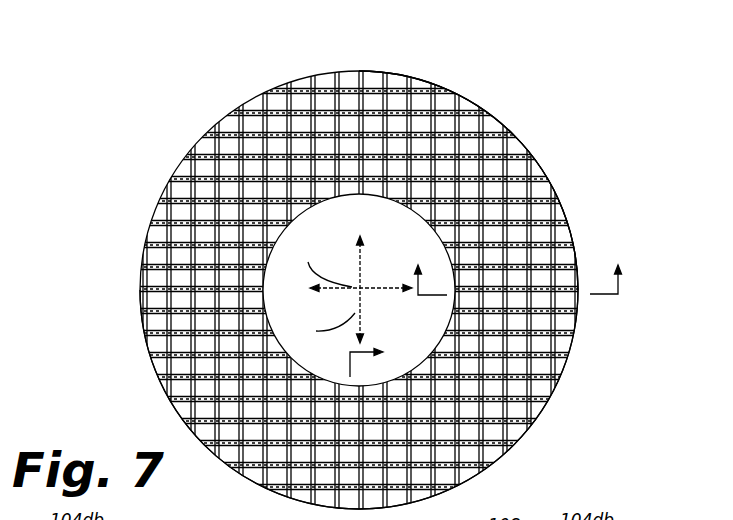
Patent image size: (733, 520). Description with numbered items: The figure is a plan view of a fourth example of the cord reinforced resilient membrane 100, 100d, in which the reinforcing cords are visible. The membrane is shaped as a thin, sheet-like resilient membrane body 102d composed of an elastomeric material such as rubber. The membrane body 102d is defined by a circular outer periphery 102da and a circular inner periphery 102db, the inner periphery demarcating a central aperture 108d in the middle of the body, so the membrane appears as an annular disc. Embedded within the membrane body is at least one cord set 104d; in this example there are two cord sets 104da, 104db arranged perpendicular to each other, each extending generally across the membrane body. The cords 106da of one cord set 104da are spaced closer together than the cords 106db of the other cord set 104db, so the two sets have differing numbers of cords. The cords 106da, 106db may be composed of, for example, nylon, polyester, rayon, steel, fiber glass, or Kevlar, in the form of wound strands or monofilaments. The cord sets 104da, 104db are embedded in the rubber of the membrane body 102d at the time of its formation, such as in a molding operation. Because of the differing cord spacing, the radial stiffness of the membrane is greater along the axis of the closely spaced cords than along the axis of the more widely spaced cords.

The cord reinforced resilient membrane 100 is at (379, 268).
The cord reinforced resilient membrane 100d is at (379, 268).
The membrane body 102d is at (378, 290).
The circular outer periphery 102da is at (560, 200).
The circular inner periphery 102db is at (455, 318).
The cord set 104d is at (372, 267).
The cord set 104da is at (537, 188).
The cord set 104db is at (277, 421).
The cords 106da is at (207, 205).
The cords 106db is at (433, 413).
The central aperture 108d is at (287, 327).